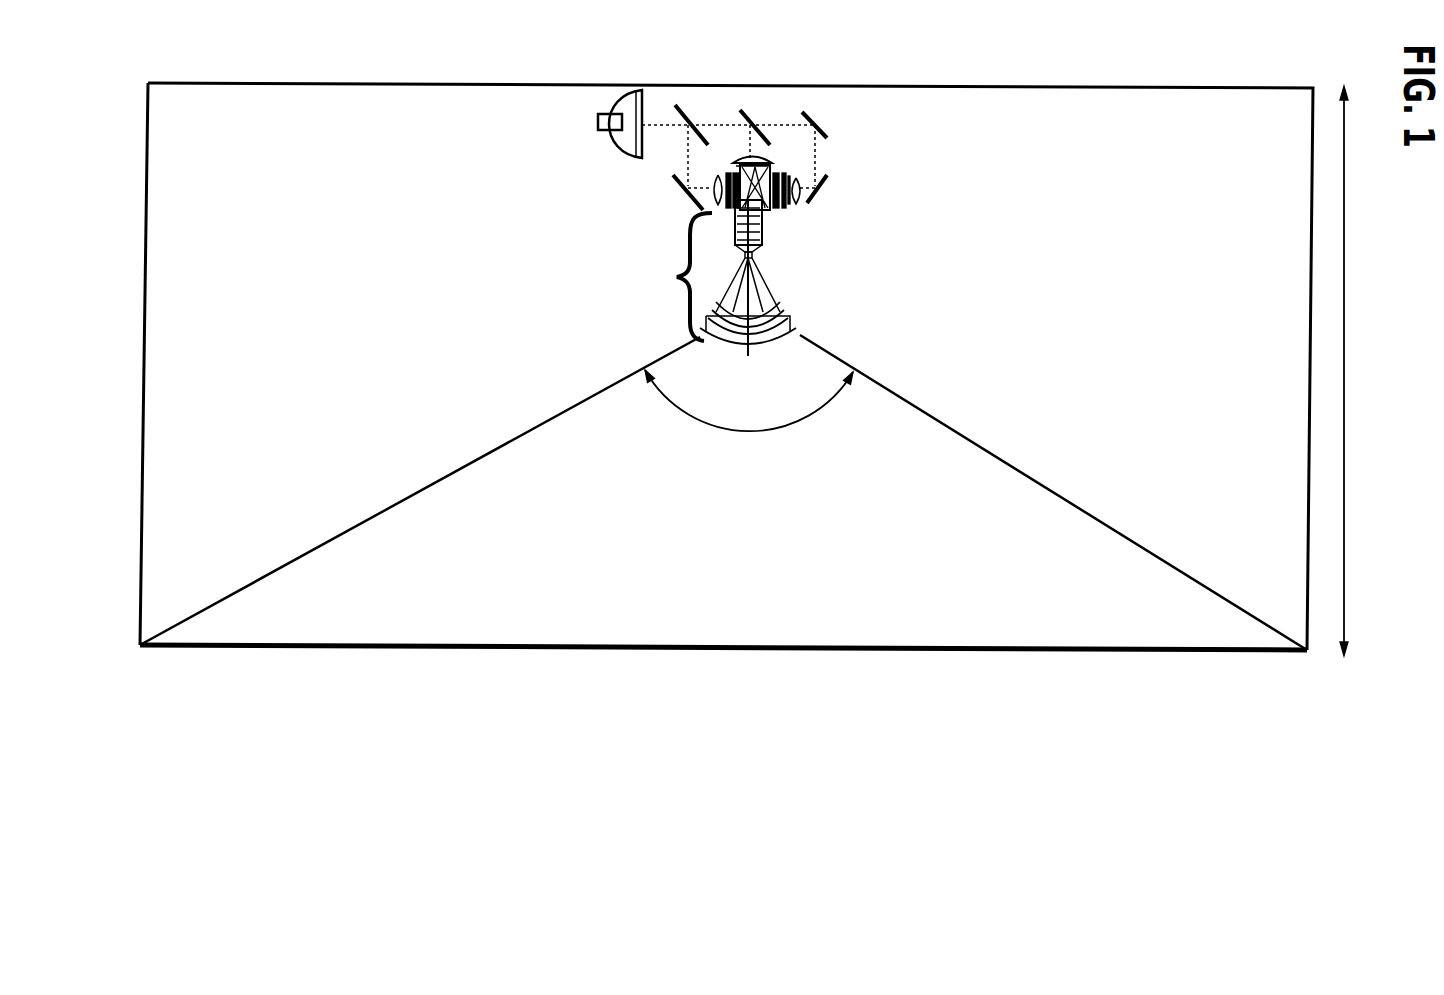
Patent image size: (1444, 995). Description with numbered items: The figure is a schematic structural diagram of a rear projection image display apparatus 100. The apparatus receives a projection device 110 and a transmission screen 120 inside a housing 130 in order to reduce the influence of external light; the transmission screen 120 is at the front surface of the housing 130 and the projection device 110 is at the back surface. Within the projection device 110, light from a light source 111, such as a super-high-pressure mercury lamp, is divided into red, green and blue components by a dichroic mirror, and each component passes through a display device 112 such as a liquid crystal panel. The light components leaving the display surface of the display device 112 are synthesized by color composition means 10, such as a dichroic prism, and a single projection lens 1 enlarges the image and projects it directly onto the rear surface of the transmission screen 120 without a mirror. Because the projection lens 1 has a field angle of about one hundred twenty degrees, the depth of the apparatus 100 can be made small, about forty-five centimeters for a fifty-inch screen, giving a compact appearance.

The projection lens 1 is at (656, 301).
The color composition means 10 is at (767, 218).
The rear projection image display apparatus 100 is at (316, 694).
The projection device 110 is at (870, 180).
The light source 111 is at (612, 142).
The display device 112 is at (720, 165).
The transmission screen 120 is at (522, 650).
The housing 130 is at (145, 352).